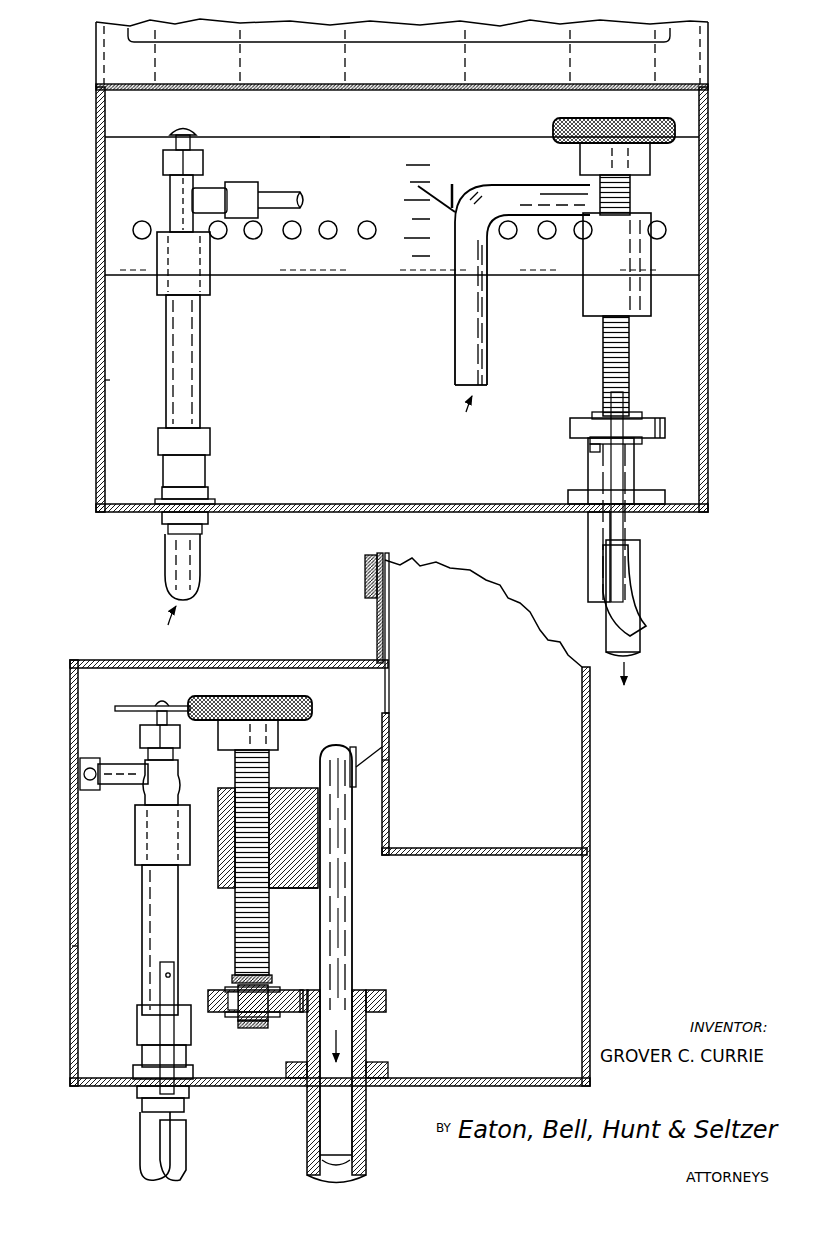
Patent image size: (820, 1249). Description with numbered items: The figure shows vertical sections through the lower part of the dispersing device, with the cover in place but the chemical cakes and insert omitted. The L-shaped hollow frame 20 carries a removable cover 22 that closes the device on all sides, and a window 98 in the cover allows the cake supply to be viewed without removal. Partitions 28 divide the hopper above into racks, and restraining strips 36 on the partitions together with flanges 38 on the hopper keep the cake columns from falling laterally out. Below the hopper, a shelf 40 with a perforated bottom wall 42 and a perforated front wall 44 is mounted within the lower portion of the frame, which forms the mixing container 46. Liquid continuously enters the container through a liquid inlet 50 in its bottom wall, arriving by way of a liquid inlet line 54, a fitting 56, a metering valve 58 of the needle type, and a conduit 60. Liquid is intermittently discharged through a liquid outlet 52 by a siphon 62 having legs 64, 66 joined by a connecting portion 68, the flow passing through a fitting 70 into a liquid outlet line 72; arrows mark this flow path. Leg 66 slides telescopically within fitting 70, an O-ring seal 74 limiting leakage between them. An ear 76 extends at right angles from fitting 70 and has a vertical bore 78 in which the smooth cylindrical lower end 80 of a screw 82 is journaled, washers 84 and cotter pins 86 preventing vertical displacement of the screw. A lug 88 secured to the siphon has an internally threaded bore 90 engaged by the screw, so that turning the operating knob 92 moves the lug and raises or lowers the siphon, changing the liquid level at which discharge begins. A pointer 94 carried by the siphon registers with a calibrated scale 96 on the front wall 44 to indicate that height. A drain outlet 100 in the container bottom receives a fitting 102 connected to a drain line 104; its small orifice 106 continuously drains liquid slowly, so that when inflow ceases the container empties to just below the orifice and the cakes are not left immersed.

In FIG. 4, the frame 20 is at (90, 286).
In FIG. 5, the frame 20 is at (66, 878).
In FIG. 4, the cover 22 is at (86, 57).
In FIG. 5, the cover 22 is at (298, 650).
In FIG. 5, the partitions 28 is at (496, 668).
In FIG. 4, the restraining strips 36 is at (290, 66).
In FIG. 5, the restraining strips 36 is at (389, 616).
In FIG. 4, the flanges 38 is at (130, 68).
In FIG. 4, the shelf 40 is at (330, 103).
In FIG. 5, the shelf 40 is at (392, 742).
In FIG. 5, the perforated bottom wall 42 is at (496, 828).
In FIG. 4, the perforated front wall 44 is at (358, 166).
In FIG. 5, the perforated front wall 44 is at (389, 766).
In FIG. 4, the mixing container 46 is at (126, 380).
In FIG. 5, the mixing container 46 is at (110, 944).
In FIG. 4, the liquid inlet 50 is at (212, 500).
In FIG. 4, the liquid outlet 52 is at (590, 520).
In FIG. 4, the liquid inlet line 54 is at (200, 558).
In FIG. 5, the liquid inlet line 54 is at (146, 1168).
In FIG. 4, the fitting 56 is at (200, 347).
In FIG. 5, the fitting 56 is at (148, 906).
In FIG. 4, the metering valve 58 is at (170, 190).
In FIG. 5, the metering valve 58 is at (140, 738).
In FIG. 4, the conduit 60 is at (278, 190).
In FIG. 5, the conduit 60 is at (122, 784).
In FIG. 4, the siphon 62 is at (455, 358).
In FIG. 5, the siphon 62 is at (356, 916).
In FIG. 4, the siphon leg 64 is at (476, 364).
In FIG. 4, the siphon leg 66 is at (630, 360).
In FIG. 5, the siphon leg 66 is at (340, 893).
In FIG. 4, the connecting portion 68 is at (546, 192).
In FIG. 4, the fitting 70 is at (590, 469).
In FIG. 5, the fitting 70 is at (366, 1032).
In FIG. 4, the liquid outlet line 72 is at (640, 632).
In FIG. 5, the liquid outlet line 72 is at (352, 1142).
In FIG. 5, the O-ring seal 74 is at (360, 990).
In FIG. 4, the ear 76 is at (572, 430).
In FIG. 5, the ear 76 is at (212, 1014).
In FIG. 5, the vertical bore 78 is at (232, 1004).
In FIG. 4, the smooth cylindrical lower end 80 is at (590, 446).
In FIG. 5, the smooth cylindrical lower end 80 is at (244, 1014).
In FIG. 4, the screw 82 is at (600, 330).
In FIG. 5, the screw 82 is at (238, 920).
In FIG. 4, the washers 84 is at (594, 414).
In FIG. 5, the washers 84 is at (276, 988).
In FIG. 5, the cotter pins 86 is at (234, 976).
In FIG. 4, the lug 88 is at (583, 293).
In FIG. 5, the lug 88 is at (300, 872).
In FIG. 5, the internally threaded bore 90 is at (268, 798).
In FIG. 4, the operating knob 92 is at (646, 120).
In FIG. 5, the operating knob 92 is at (296, 700).
In FIG. 4, the pointer 94 is at (444, 190).
In FIG. 4, the calibrated scale 96 is at (432, 238).
In FIG. 4, the window 98 is at (415, 34).
In FIG. 5, the window 98 is at (376, 562).
In FIG. 4, the drain outlet 100 is at (580, 487).
In FIG. 5, the drain outlet 100 is at (152, 1072).
In FIG. 4, the fitting 102 is at (620, 476).
In FIG. 5, the fitting 102 is at (158, 1012).
In FIG. 4, the drain line 104 is at (636, 559).
In FIG. 5, the drain line 104 is at (176, 1135).
In FIG. 4, the orifice 106 is at (628, 404).
In FIG. 5, the orifice 106 is at (160, 977).